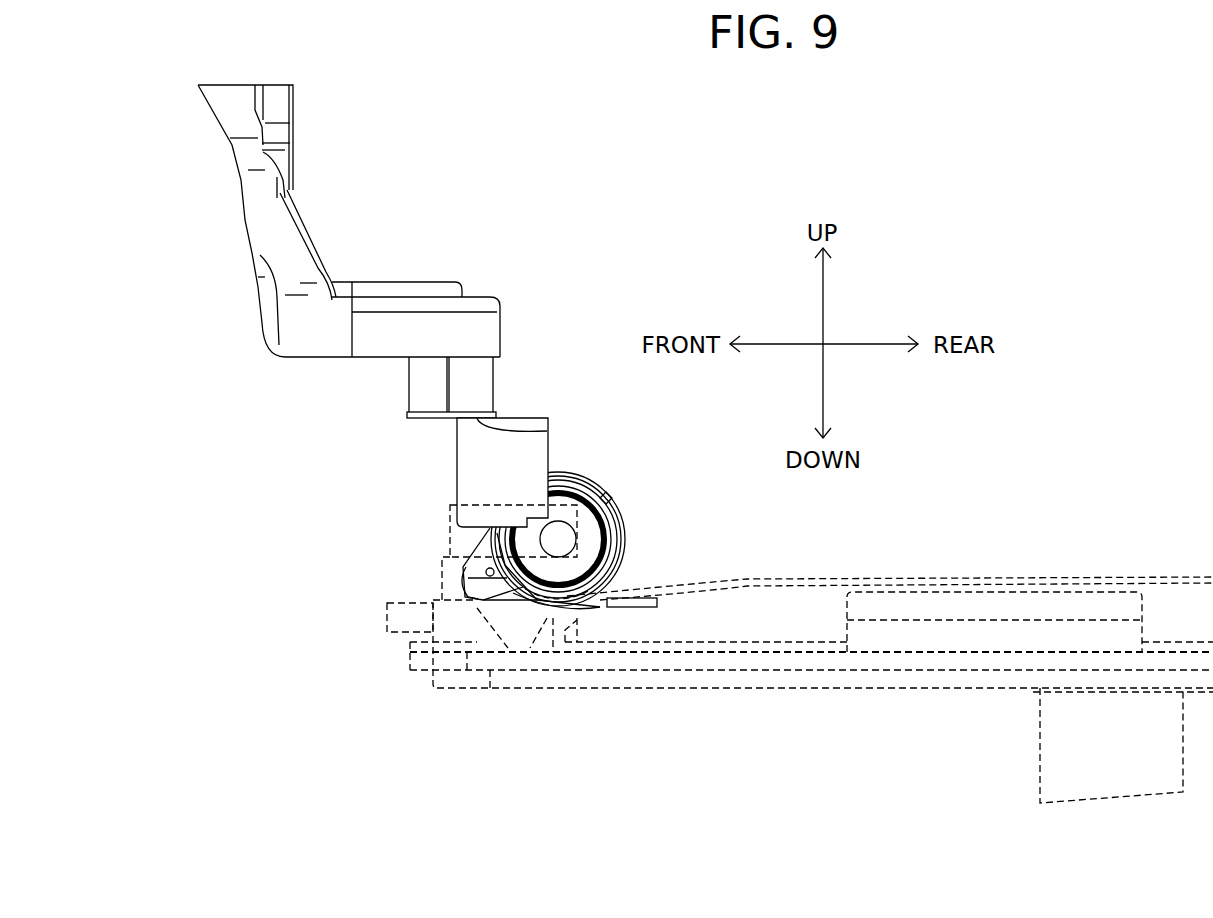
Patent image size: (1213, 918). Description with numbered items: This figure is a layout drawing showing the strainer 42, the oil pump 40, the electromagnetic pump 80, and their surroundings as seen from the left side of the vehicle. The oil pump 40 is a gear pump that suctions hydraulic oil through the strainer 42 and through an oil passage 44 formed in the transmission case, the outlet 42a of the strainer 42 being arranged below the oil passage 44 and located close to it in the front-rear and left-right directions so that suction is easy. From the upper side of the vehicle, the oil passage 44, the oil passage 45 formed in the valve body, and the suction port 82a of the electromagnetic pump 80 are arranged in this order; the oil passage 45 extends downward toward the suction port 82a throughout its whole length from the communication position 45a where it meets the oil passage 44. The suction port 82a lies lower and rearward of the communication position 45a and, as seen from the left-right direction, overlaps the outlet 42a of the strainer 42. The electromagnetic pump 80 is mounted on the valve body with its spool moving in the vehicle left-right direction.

The oil pump 40 is at (320, 345).
The oil passage 44 is at (480, 388).
The oil passage 45 is at (540, 470).
The communication position 45a is at (547, 428).
The strainer 42 is at (470, 578).
The outlet of the strainer 42a is at (452, 505).
The electromagnetic pump 80 is at (602, 540).
The suction port 82a is at (610, 500).